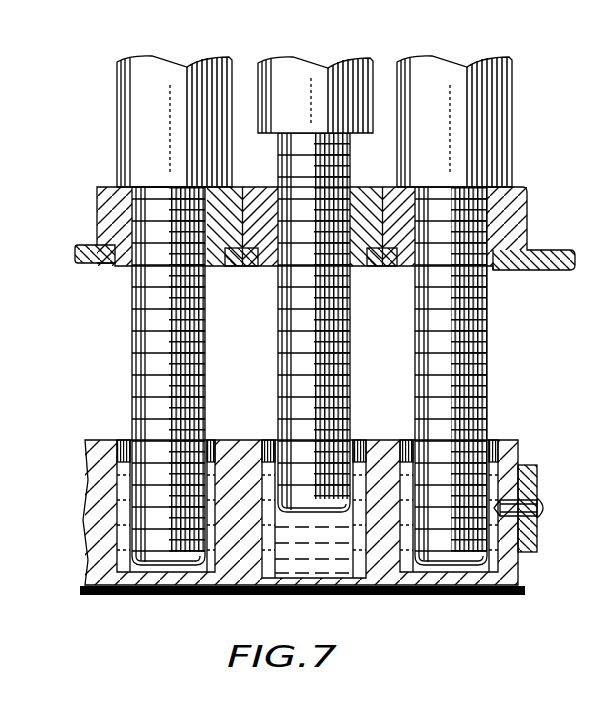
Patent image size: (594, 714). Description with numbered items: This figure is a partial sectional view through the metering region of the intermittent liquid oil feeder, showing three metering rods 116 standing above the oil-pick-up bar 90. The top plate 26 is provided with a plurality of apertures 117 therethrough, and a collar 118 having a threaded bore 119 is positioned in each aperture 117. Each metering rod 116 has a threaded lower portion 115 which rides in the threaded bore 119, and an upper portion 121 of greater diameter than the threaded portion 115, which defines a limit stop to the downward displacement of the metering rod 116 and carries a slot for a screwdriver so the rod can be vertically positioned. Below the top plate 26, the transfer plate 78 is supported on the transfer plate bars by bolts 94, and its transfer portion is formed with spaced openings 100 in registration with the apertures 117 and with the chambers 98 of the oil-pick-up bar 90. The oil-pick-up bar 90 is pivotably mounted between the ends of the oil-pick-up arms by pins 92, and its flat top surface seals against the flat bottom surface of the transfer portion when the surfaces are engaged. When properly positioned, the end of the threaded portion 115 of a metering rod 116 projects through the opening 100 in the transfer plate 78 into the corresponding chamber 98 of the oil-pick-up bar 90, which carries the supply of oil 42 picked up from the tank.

The top plate 26 is at (556, 258).
The supply of oil 42 is at (128, 568).
The transfer plate 78 is at (273, 484).
The oil-pick-up bar 90 is at (87, 556).
The pin 92 is at (546, 511).
The bolt 94 is at (534, 500).
The chamber 98 is at (117, 506).
The opening 100 is at (126, 440).
The threaded lower portion 115 is at (148, 322).
The metering rod 116 is at (144, 121).
The aperture 117 is at (120, 264).
The collar 118 is at (98, 222).
The threaded bore 119 is at (150, 187).
The upper portion 121 is at (120, 118).